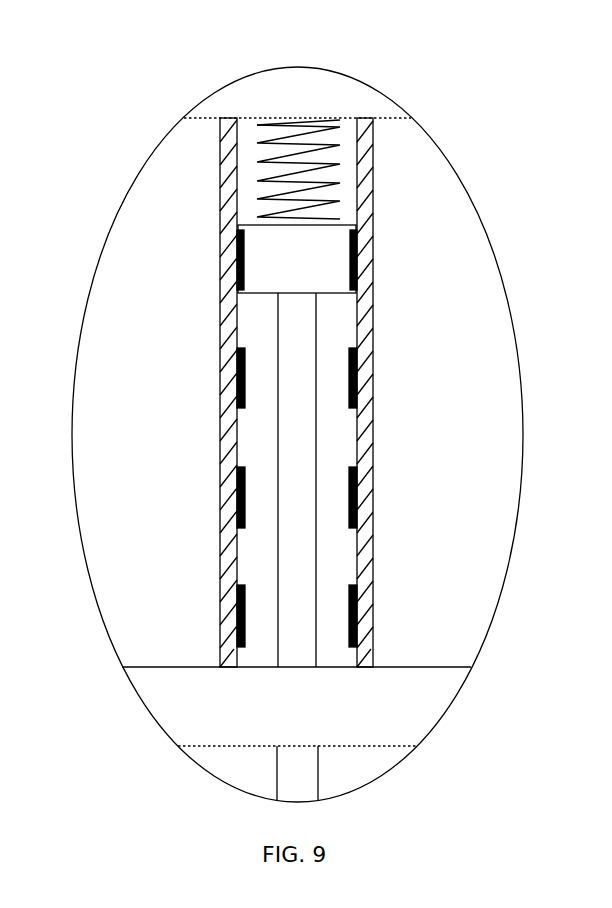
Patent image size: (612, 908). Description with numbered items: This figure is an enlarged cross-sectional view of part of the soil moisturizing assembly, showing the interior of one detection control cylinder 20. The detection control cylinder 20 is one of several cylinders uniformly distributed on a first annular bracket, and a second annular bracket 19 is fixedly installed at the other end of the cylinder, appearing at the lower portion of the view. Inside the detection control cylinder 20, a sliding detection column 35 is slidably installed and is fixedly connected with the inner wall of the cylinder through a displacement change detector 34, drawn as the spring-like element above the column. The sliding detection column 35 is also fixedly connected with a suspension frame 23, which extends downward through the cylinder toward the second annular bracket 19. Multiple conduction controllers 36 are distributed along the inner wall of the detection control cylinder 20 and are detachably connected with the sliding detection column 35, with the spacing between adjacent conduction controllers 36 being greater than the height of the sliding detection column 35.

The second annular bracket 19 is at (245, 712).
The detection control cylinder 20 is at (222, 485).
The suspension frame 23 is at (297, 620).
The displacement change detector 34 is at (265, 192).
The sliding detection column 35 is at (337, 252).
The conduction controller 36 is at (357, 407).